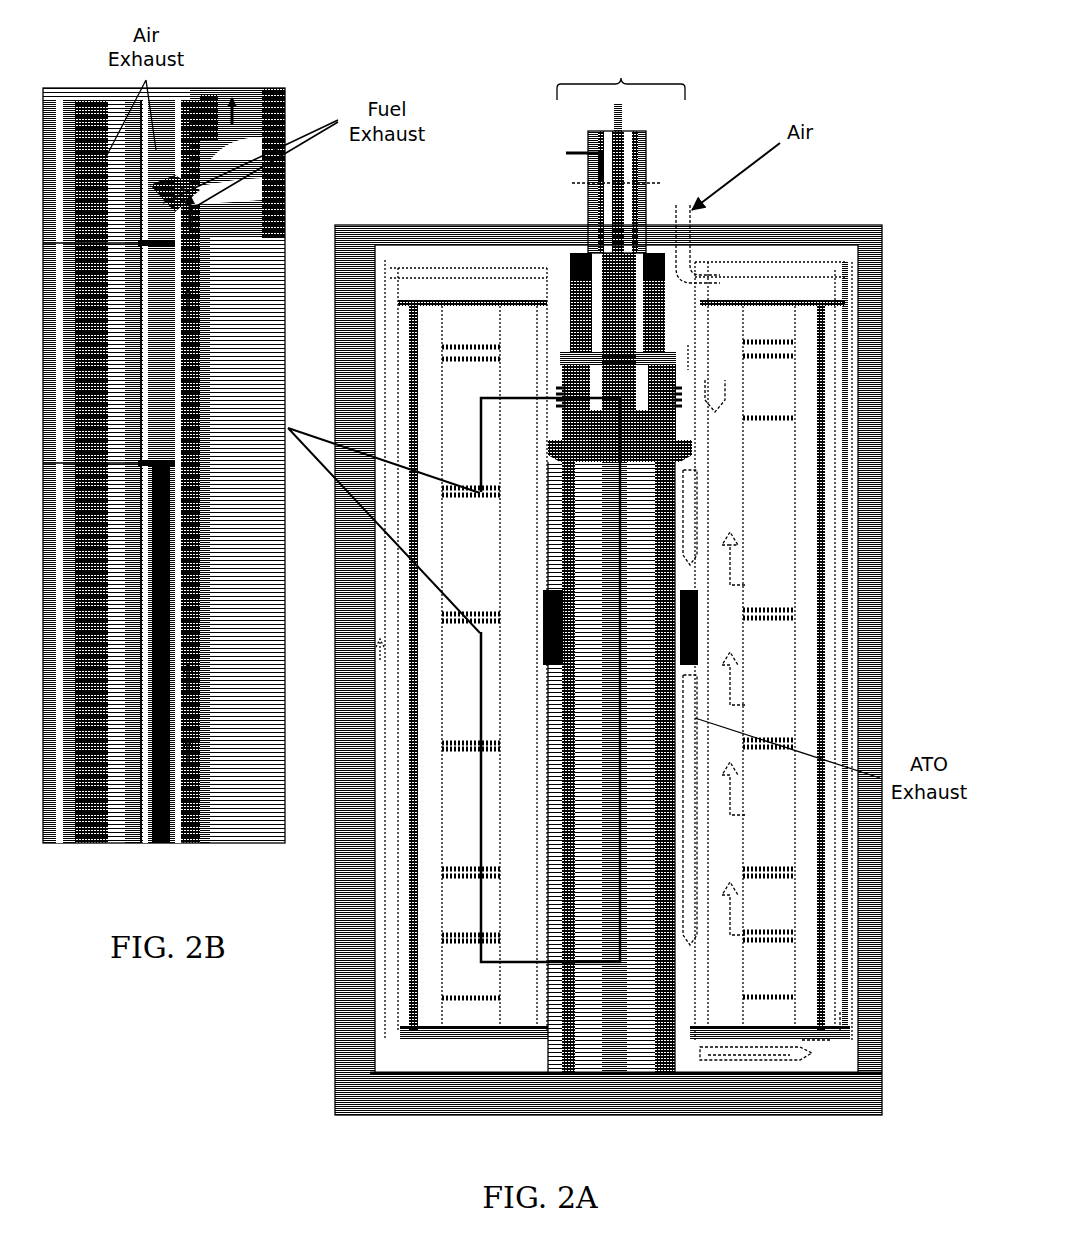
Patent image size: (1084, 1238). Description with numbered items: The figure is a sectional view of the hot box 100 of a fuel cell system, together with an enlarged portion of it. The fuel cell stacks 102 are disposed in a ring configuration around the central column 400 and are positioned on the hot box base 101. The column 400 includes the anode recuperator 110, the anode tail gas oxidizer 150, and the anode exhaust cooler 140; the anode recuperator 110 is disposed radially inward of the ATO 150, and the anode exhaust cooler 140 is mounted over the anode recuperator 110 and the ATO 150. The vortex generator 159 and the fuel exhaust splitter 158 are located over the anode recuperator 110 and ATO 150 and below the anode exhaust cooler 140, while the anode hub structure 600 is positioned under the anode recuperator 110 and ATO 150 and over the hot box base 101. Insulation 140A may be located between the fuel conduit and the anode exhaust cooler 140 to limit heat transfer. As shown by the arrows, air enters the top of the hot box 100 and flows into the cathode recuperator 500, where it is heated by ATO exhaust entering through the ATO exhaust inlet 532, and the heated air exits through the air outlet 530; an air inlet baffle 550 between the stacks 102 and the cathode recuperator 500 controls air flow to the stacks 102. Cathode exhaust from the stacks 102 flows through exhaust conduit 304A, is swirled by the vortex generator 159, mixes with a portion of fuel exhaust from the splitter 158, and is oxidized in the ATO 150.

In FIG. 2A, the hot box 100 is at (612, 1112).
In FIG. 2A, the hot box base 101 is at (490, 1072).
In FIG. 2B, the fuel cell stack 102 is at (85, 805).
In FIG. 2A, the fuel cell stack 102 is at (792, 592).
In FIG. 2B, the anode recuperator heat exchanger 110 is at (215, 293).
In FIG. 2A, the anode recuperator heat exchanger 110 is at (672, 583).
In FIG. 2A, the anode exhaust cooler heat exchanger 140 is at (568, 290).
In FIG. 2A, the anode exhaust cooler inner core insulation 140A is at (598, 270).
In FIG. 2B, the anode tail gas oxidizer 150 is at (172, 815).
In FIG. 2A, the anode tail gas oxidizer 150 is at (703, 630).
In FIG. 2B, the splitter 158 is at (163, 198).
In FIG. 2A, the vortex generator 159 is at (672, 457).
In FIG. 2A, the exhaust conduit 304A is at (690, 360).
In FIG. 2A, the central column 400 is at (621, 84).
In FIG. 2A, the cathode recuperator heat exchanger 500 is at (845, 474).
In FIG. 2A, the air outlet 530 is at (843, 745).
In FIG. 2A, the ATO exhaust inlet 532 is at (700, 402).
In FIG. 2A, the air inlet baffle 550 is at (818, 372).
In FIG. 2A, the anode hub structure 600 is at (767, 1057).